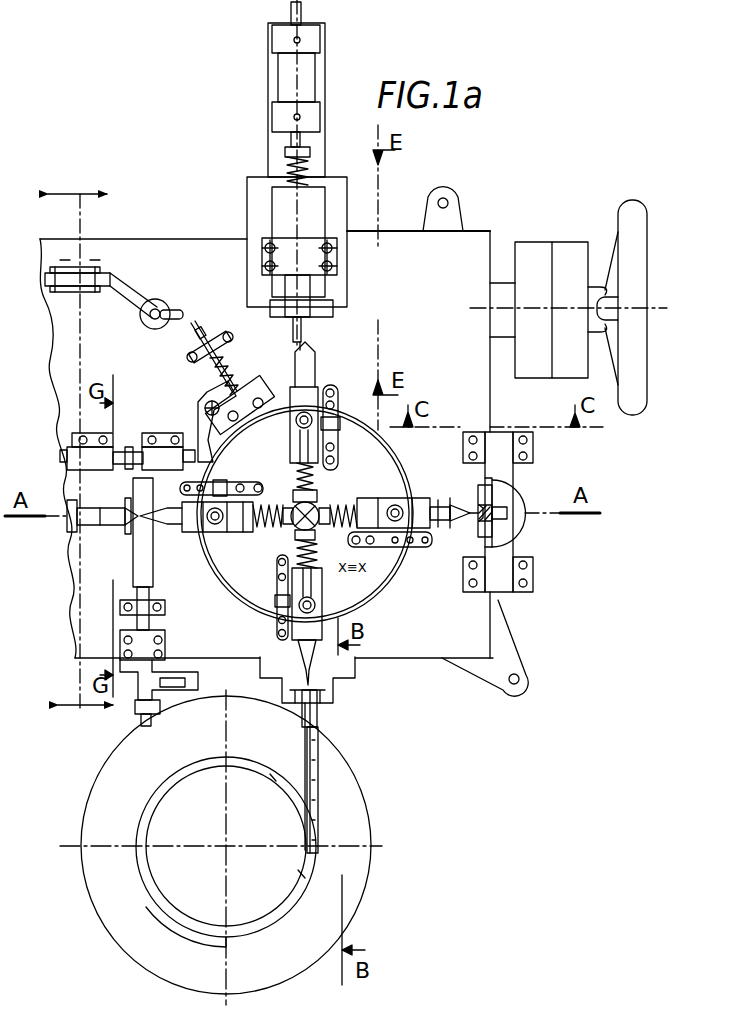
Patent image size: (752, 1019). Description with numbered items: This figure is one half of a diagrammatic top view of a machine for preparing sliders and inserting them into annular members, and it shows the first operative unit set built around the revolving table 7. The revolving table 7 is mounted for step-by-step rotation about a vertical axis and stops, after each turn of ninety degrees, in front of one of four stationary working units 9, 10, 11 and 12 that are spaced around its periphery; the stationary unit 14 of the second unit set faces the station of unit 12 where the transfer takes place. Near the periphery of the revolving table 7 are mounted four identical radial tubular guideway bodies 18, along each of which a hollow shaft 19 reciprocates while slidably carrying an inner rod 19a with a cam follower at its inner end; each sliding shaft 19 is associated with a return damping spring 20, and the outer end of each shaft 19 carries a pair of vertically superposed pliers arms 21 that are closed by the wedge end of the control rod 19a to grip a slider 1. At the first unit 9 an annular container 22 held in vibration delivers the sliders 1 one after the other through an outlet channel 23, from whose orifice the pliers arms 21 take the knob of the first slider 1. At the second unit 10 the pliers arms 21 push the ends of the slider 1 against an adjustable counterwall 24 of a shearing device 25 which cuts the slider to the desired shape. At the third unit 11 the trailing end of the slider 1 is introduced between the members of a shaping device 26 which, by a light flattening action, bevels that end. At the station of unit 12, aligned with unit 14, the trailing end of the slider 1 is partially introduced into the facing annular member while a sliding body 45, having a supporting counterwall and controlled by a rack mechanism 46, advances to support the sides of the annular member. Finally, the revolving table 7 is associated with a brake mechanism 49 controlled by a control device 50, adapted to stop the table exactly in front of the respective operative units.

The slider 1 is at (316, 707).
The revolving table 7 is at (383, 598).
The stationary working unit 9 is at (372, 813).
The stationary working unit 10 is at (509, 594).
The stationary working unit 11 is at (350, 215).
The stationary working unit 12 is at (148, 495).
The stationary working unit 14 is at (92, 483).
The radial tubular guideway body 18 is at (220, 538).
The hollow sliding shaft 19 is at (298, 651).
The inner control rod 19a is at (331, 500).
The return damping spring 20 is at (293, 468).
The pliers arms 21 is at (310, 686).
The annular container 22 is at (294, 903).
The outlet channel 23 is at (314, 766).
The counterwall 24 is at (478, 497).
The shearing device 25 is at (504, 524).
The shaping device 26 is at (302, 331).
The sliding body 45 is at (128, 505).
The rack mechanism 46 is at (145, 593).
The brake mechanism 49 is at (243, 413).
The control device 50 is at (166, 433).